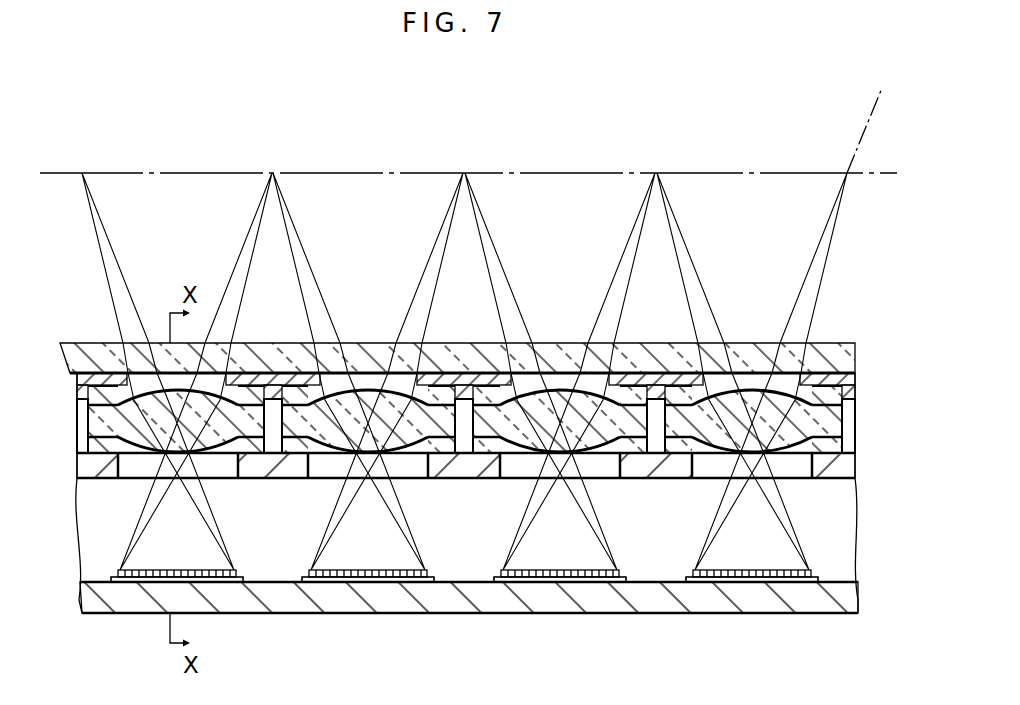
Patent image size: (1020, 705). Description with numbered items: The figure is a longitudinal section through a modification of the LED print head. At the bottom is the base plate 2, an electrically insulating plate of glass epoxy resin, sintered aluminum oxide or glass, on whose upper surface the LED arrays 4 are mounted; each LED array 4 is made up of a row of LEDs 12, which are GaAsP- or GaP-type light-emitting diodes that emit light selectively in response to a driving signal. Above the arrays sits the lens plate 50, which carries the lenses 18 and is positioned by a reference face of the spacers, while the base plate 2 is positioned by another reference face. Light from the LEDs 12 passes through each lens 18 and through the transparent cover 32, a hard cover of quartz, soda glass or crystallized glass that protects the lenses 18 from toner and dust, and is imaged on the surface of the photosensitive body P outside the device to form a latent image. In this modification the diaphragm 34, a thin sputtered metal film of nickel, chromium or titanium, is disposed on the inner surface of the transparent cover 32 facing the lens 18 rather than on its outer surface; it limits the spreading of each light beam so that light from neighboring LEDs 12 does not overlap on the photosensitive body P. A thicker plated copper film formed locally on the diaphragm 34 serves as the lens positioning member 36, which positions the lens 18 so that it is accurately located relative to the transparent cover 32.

The base plate 2 is at (625, 607).
The LED array 4 is at (752, 582).
The LED 12 is at (745, 570).
The lens 18 is at (752, 397).
The transparent cover 32 is at (843, 358).
The diaphragm 34 is at (678, 380).
The lens positioning member 36 is at (655, 391).
The lens plate 50 is at (818, 465).
The photosensitive body P is at (565, 172).